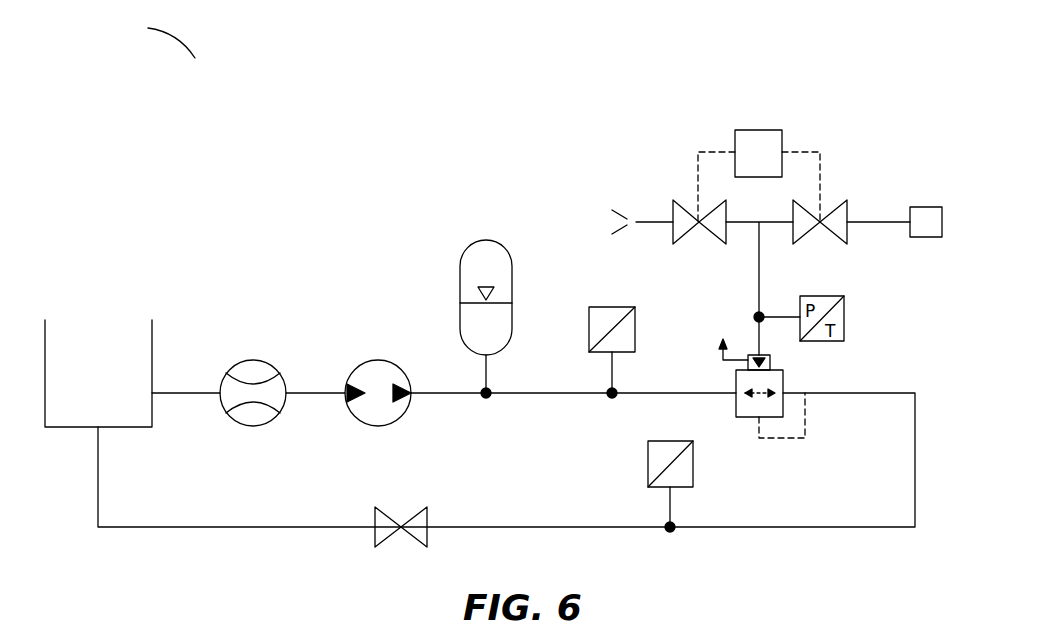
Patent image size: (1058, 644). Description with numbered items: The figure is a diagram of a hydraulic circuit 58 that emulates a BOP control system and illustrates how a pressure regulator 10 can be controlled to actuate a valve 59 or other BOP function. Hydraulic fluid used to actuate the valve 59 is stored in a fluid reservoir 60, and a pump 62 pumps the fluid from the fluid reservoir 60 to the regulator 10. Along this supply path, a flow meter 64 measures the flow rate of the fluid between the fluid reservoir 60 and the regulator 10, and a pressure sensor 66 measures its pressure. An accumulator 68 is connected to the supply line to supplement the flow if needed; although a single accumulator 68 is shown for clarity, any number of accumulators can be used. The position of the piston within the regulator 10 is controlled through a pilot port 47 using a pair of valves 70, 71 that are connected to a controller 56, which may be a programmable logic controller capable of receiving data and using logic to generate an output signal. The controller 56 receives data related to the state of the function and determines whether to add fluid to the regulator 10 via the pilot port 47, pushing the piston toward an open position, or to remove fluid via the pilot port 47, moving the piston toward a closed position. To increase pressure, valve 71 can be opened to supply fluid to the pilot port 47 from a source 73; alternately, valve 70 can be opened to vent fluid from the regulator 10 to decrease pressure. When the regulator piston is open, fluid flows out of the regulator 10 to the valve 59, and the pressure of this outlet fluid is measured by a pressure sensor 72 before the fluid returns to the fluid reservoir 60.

The hydraulic circuit 58 is at (155, 41).
The fluid reservoir 60 is at (111, 385).
The flow meter 64 is at (253, 360).
The pump 62 is at (380, 360).
The accumulator 68 is at (486, 240).
The pressure sensor 66 is at (612, 307).
The controller 56 is at (760, 130).
The valve 70 is at (673, 210).
The valve 71 is at (847, 210).
The source 73 is at (926, 207).
The pilot port 47 is at (752, 355).
The regulator 10 is at (810, 385).
The pressure sensor 72 is at (648, 465).
The valve 59 is at (390, 515).